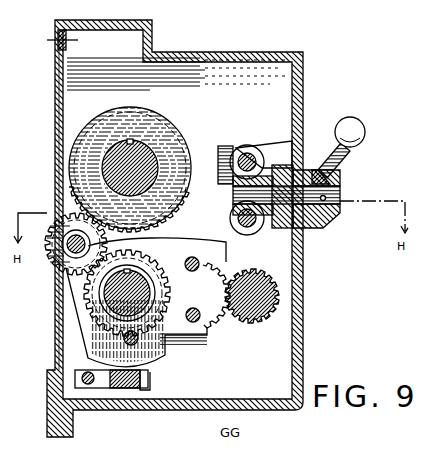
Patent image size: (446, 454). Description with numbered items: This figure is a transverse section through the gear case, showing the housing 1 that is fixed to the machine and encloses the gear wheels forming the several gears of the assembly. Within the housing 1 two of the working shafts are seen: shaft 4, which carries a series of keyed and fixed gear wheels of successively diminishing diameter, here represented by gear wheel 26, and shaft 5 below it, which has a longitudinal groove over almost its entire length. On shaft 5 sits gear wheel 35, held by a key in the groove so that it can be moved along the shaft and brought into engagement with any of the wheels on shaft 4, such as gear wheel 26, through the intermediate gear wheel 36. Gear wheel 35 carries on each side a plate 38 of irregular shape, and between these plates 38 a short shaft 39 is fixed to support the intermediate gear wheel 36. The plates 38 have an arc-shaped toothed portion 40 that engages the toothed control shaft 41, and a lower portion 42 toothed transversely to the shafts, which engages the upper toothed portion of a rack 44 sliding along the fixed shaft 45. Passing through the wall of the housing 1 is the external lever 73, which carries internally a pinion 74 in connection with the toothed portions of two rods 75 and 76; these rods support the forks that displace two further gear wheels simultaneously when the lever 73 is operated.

The housing 1 is at (300, 104).
The shaft 4 is at (148, 171).
The shaft 5 is at (110, 291).
The gear wheel 26 is at (160, 130).
The gear wheel 35 is at (132, 256).
The intermediate gear wheel 36 is at (54, 269).
The plates 38 is at (186, 248).
The short shaft 39 is at (63, 243).
The toothed portion 40 is at (224, 263).
The toothed control shaft 41 is at (258, 278).
The lower portion 42 is at (146, 372).
The rack 44 is at (140, 386).
The fixed shaft 45 is at (88, 386).
The external lever 73 is at (344, 160).
The pinion 74 is at (231, 191).
The rod 75 is at (247, 153).
The rod 76 is at (231, 213).